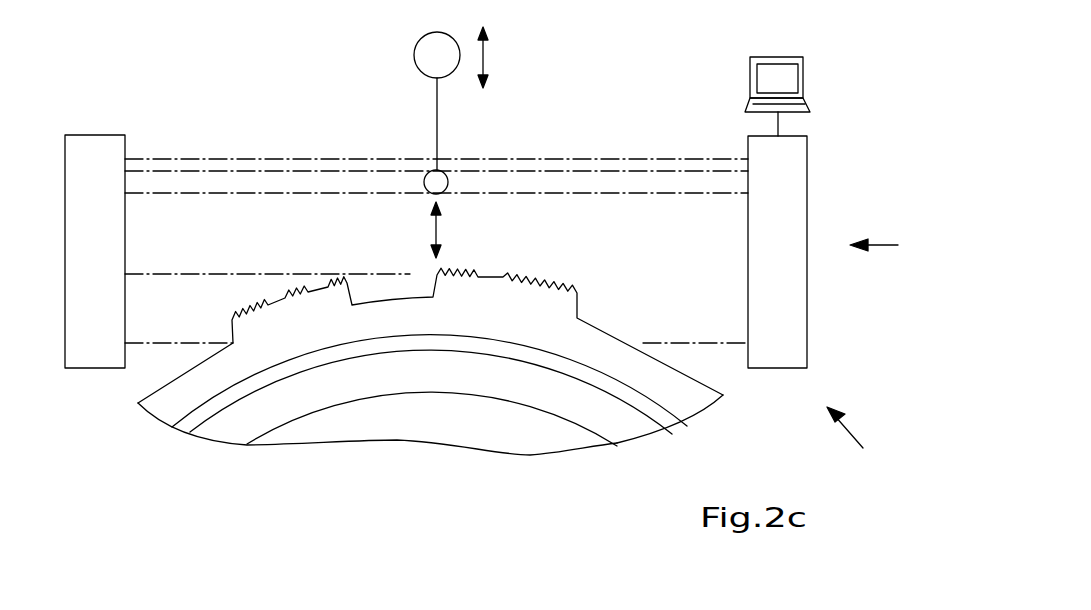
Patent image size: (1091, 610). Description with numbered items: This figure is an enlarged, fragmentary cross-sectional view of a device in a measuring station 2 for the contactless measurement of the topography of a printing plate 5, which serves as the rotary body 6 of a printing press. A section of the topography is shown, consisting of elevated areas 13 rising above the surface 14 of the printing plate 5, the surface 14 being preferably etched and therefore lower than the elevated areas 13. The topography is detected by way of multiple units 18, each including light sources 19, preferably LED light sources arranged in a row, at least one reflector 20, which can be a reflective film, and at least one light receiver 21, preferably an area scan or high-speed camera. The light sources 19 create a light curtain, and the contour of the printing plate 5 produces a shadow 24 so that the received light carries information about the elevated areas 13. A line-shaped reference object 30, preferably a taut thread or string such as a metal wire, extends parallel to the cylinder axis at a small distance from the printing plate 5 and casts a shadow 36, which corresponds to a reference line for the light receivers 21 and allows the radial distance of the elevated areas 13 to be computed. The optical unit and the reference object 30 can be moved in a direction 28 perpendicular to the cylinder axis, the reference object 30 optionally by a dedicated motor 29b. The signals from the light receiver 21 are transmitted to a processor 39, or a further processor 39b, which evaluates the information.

The measuring station 2 is at (857, 443).
The printing plate 5 is at (414, 305).
The rotary body 6 is at (414, 305).
The elevated areas 13 is at (273, 298).
The surface 14 is at (193, 367).
The units 18 is at (896, 248).
The light sources 19 is at (839, 252).
The reflector 20 is at (98, 157).
The light receiver 21 is at (790, 320).
The shadow 24 is at (155, 330).
The direction 28 is at (488, 52).
The dedicated motor 29b is at (414, 50).
The reference object 30 is at (424, 180).
The shadow of the reference object 36 is at (590, 183).
The processor 39 is at (710, 96).
The further processor 39b is at (750, 80).